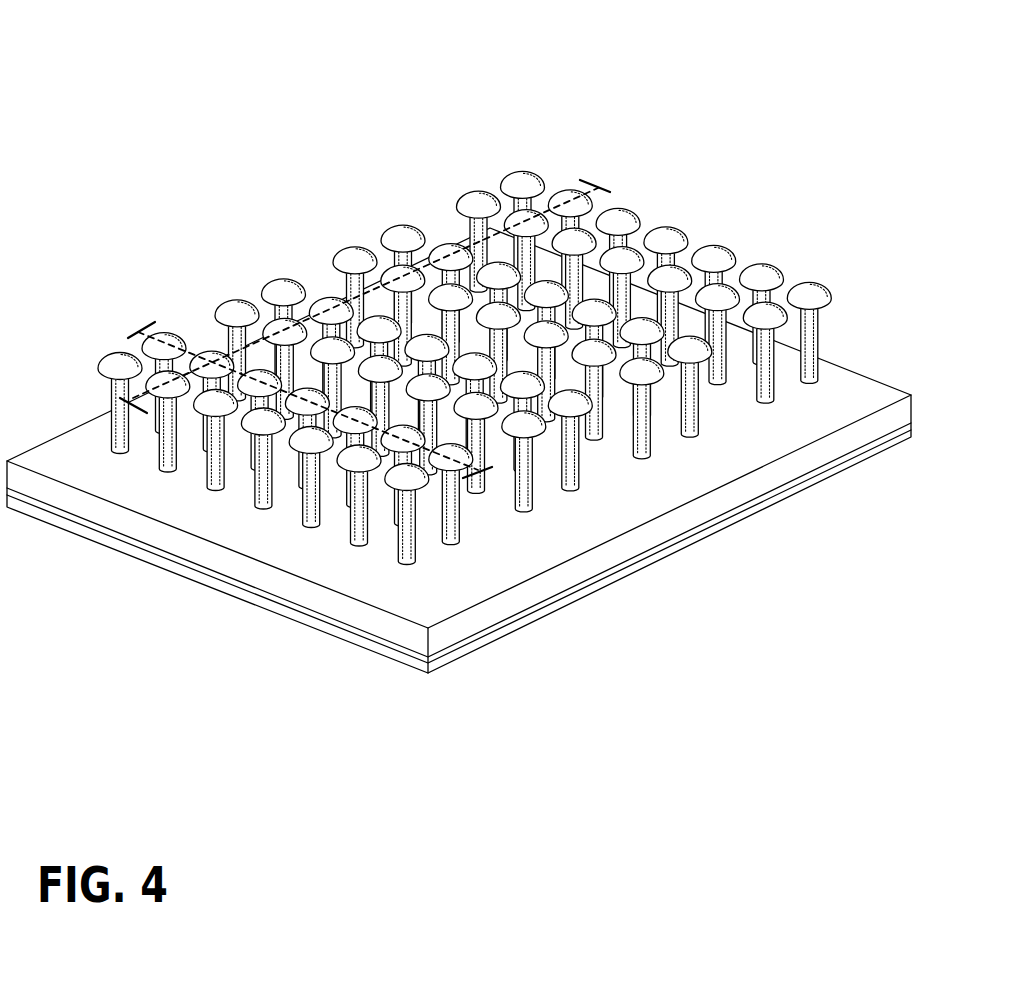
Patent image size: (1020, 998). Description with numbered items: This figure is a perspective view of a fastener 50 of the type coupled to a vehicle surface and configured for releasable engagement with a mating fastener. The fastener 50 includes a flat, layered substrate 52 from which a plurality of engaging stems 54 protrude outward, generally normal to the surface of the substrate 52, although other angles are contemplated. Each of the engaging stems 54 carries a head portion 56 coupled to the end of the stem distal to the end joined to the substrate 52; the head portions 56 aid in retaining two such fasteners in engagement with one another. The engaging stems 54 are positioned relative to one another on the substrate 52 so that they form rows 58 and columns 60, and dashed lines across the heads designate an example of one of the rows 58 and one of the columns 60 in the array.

The fastener 50 is at (455, 147).
The substrate 52 is at (612, 508).
The engaging stems 54 is at (697, 405).
The head portions 56 is at (690, 348).
The rows 58 is at (278, 330).
The columns 60 is at (357, 428).